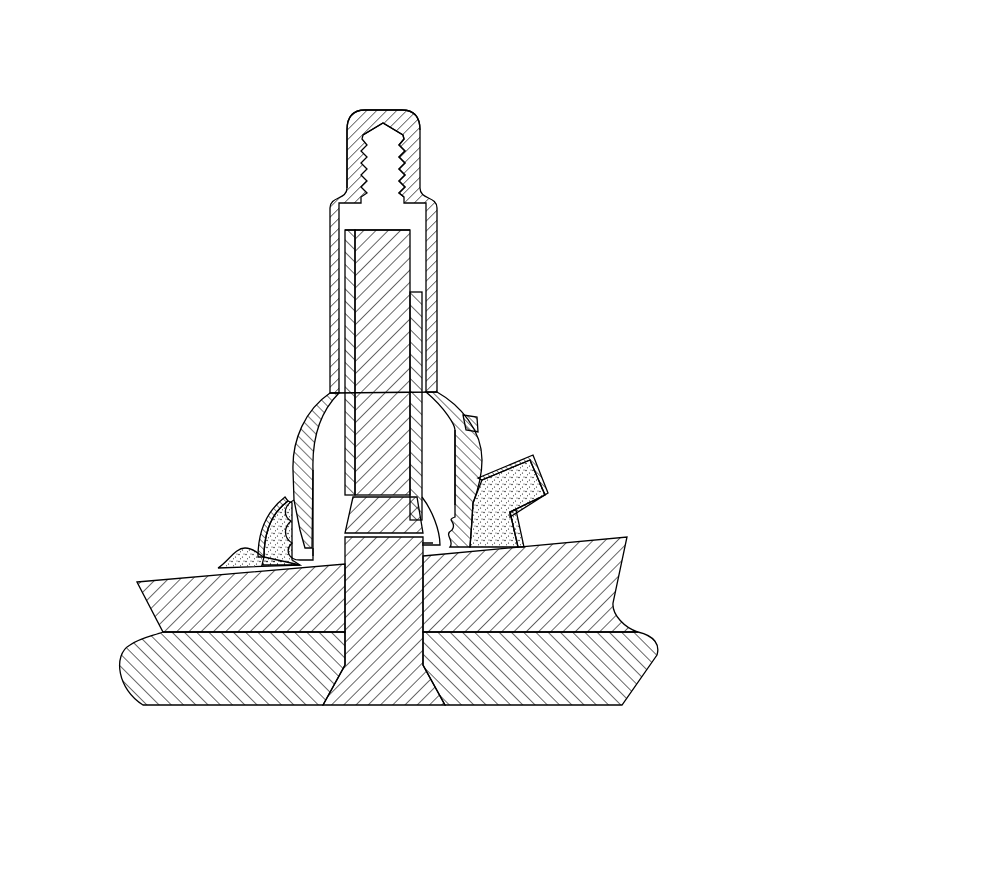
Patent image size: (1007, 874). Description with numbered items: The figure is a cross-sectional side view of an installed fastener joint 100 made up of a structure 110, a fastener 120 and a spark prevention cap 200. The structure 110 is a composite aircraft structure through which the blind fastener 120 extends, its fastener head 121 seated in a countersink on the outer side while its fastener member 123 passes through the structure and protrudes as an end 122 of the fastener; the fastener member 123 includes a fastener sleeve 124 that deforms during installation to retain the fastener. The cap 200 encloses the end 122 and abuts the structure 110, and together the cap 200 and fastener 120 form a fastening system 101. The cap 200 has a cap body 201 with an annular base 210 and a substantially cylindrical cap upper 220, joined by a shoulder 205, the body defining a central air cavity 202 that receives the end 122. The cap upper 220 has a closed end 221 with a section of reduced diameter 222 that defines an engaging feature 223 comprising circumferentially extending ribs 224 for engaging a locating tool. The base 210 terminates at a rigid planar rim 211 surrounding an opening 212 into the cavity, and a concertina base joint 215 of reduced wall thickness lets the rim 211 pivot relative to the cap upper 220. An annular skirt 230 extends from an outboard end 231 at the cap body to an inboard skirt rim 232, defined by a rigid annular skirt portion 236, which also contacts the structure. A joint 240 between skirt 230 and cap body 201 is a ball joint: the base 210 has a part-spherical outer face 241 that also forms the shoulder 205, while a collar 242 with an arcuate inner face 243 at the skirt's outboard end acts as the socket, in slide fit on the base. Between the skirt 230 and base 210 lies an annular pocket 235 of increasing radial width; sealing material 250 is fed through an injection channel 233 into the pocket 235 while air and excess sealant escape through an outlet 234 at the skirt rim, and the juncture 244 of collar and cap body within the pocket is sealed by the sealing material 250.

The fastener joint 100 is at (700, 88).
The fastening system 101 is at (653, 227).
The structure 110 is at (637, 650).
The fastener 120 is at (365, 697).
The fastener head 121 is at (392, 697).
The end of fastener 122 is at (378, 237).
The fastener member 123 is at (398, 285).
The fastener sleeve 124 is at (350, 256).
The spark prevention cap 200 is at (162, 118).
The cap body 201 is at (232, 285).
The central air cavity 202 is at (330, 413).
The shoulder 205 is at (322, 403).
The annular base 210 is at (443, 397).
The rim 211 is at (457, 550).
The opening 212 is at (328, 553).
The base joint 215 is at (303, 517).
The cap upper 220 is at (430, 246).
The closed end 221 is at (393, 121).
The section of reduced diameter 222 is at (349, 147).
The engaging feature 223 is at (405, 153).
The circumferentially extending ribs 224 is at (412, 176).
The annular skirt 230 is at (267, 520).
The outboard end of skirt 231 is at (277, 505).
The skirt rim 232 is at (528, 548).
The injection channel 233 is at (530, 480).
The outlet 234 is at (287, 565).
The annular pocket 235 is at (270, 543).
The skirt portion 236 is at (512, 515).
The joint 240 is at (235, 421).
The part-spherical outer face 241 is at (303, 423).
The collar 242 is at (480, 440).
The arcuate inner face 243 is at (455, 413).
The juncture 244 is at (488, 503).
The sealing material 250 is at (510, 470).